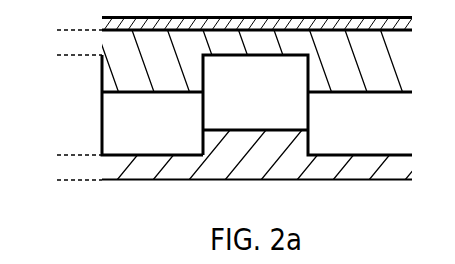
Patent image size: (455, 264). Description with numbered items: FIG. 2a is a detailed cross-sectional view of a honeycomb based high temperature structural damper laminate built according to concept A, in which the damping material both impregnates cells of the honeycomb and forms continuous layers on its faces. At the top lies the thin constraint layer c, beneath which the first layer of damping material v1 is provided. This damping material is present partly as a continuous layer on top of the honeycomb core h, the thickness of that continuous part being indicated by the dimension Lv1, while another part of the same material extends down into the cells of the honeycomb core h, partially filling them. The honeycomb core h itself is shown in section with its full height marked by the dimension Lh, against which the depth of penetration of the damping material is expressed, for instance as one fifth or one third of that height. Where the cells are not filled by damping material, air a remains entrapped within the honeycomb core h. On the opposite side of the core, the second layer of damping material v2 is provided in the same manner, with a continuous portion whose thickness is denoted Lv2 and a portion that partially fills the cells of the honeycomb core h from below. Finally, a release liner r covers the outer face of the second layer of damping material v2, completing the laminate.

The constraint layer c is at (411, 19).
The first layer of damping material v1 is at (411, 45).
The honeycomb core h is at (308, 78).
The air entrapped within the honeycomb core a is at (293, 108).
The second layer of damping material v2 is at (407, 163).
The release liner r is at (397, 180).
The thickness of continuous first damping layer Lv1 is at (63, 30).
The honeycomb core height Lh is at (78, 55).
The thickness of continuous second damping layer Lv2 is at (63, 155).